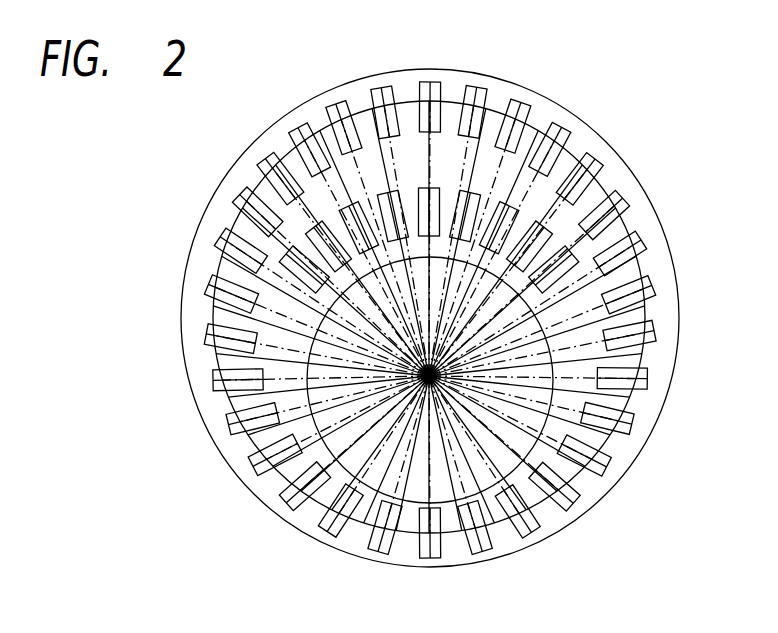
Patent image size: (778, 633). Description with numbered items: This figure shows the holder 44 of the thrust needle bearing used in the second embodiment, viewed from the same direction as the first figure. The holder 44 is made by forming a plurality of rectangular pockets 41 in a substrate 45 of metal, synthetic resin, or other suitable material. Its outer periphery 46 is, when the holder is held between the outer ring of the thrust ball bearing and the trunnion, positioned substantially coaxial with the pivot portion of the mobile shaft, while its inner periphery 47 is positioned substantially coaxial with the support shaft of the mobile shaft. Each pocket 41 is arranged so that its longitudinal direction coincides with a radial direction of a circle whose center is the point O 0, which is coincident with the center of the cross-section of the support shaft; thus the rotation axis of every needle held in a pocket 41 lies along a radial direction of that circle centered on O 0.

The pocket 41 is at (423, 196).
The holder 44 is at (565, 160).
The substrate 45 is at (450, 113).
The outer periphery 46 is at (617, 157).
The inner periphery 47 is at (546, 392).
The point O 0 is at (429, 376).